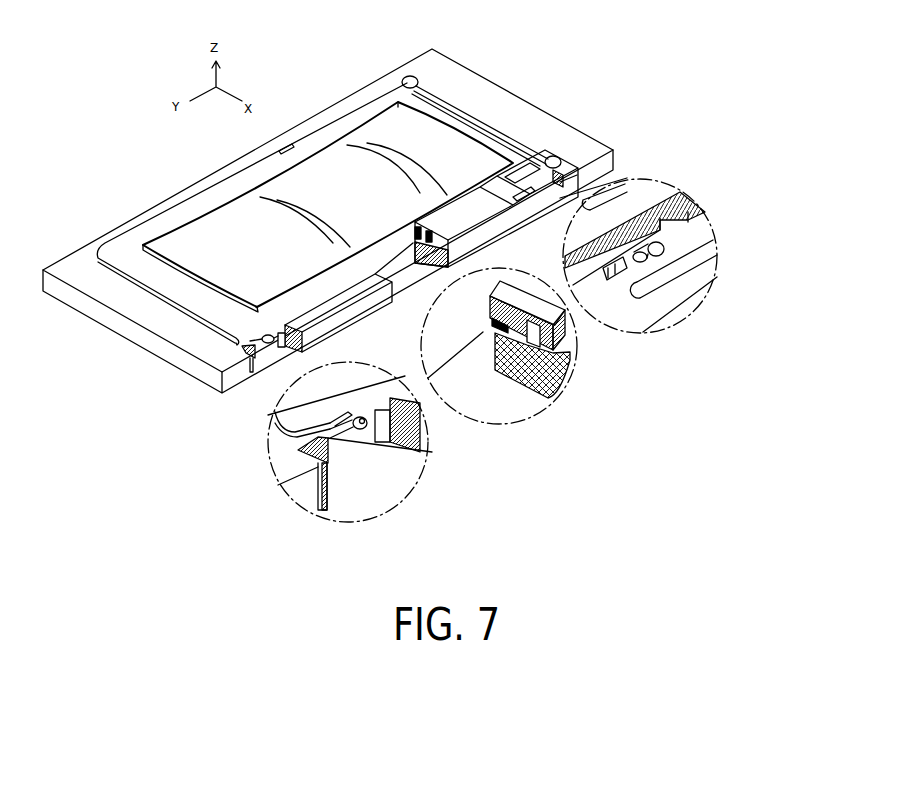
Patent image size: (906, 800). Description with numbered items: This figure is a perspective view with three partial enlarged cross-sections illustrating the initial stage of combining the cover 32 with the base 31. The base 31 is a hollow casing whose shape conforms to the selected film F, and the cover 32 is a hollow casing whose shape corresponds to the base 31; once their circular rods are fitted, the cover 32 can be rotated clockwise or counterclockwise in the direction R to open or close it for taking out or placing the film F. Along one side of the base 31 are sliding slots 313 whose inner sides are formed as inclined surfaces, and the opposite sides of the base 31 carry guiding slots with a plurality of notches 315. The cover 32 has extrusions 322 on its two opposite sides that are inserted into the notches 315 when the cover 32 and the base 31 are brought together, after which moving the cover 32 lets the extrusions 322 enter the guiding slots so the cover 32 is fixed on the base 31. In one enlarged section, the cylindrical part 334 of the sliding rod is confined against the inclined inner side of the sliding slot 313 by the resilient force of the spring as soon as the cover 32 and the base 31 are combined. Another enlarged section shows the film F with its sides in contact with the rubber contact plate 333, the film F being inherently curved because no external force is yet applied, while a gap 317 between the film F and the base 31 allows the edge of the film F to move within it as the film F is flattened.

The base 31 is at (524, 117).
The cover 32 is at (130, 256).
The direction R is at (197, 287).
The sliding slot 313 is at (638, 262).
The notch 315 is at (421, 430).
The gap 317 is at (483, 331).
The extrusion 322 is at (432, 452).
The rubber contact plate 333 is at (535, 333).
The cylindrical part 334 is at (657, 253).
The film F is at (555, 388).